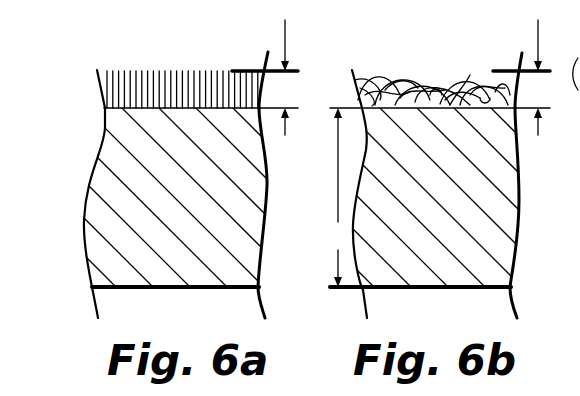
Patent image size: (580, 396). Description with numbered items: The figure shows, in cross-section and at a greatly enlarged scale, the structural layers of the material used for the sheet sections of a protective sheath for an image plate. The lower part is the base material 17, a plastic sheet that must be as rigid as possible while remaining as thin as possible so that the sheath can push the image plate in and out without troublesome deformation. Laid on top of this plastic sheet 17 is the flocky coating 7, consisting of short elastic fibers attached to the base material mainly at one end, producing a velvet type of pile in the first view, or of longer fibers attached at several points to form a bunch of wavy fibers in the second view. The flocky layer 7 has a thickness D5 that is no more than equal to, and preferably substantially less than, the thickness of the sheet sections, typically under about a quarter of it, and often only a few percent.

In FIG. 6A, the flocky coating 7 is at (185, 80).
In FIG. 6B, the flocky coating 7 is at (453, 80).
In FIG. 6A, the base material 17 is at (200, 201).
In FIG. 6B, the base material 17 is at (450, 201).
In FIG. 6A, the fluffy-layer thickness D5 is at (278, 74).
In FIG. 6B, the fluffy-layer thickness D5 is at (536, 74).